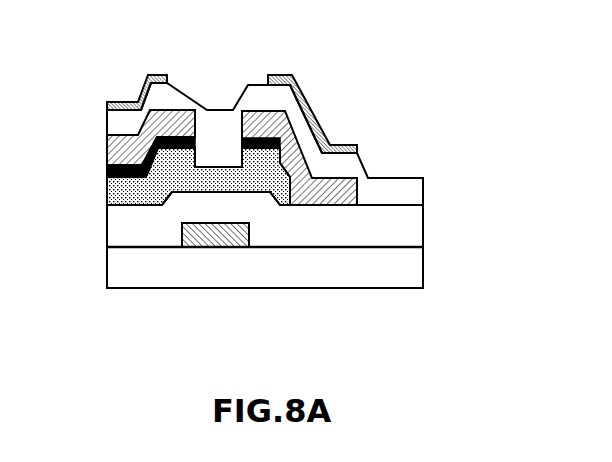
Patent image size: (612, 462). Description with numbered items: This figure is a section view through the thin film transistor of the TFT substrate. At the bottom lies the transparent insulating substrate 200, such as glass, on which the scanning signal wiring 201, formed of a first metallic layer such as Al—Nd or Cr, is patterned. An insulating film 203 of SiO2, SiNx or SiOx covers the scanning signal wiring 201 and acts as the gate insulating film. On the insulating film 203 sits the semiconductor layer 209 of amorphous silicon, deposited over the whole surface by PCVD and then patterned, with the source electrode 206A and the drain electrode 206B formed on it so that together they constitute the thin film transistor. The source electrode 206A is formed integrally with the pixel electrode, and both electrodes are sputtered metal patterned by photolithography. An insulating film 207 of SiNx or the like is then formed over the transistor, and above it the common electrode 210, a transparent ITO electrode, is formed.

The transparent insulating substrate 200 is at (400, 268).
The scanning signal wiring 201 is at (212, 232).
The insulating film 203 is at (400, 231).
The source electrode 206A is at (321, 190).
The drain electrode 206B is at (168, 122).
The insulating film 207 is at (400, 192).
The semiconductor layer 209 is at (97, 170).
The common electrode 210 is at (283, 75).